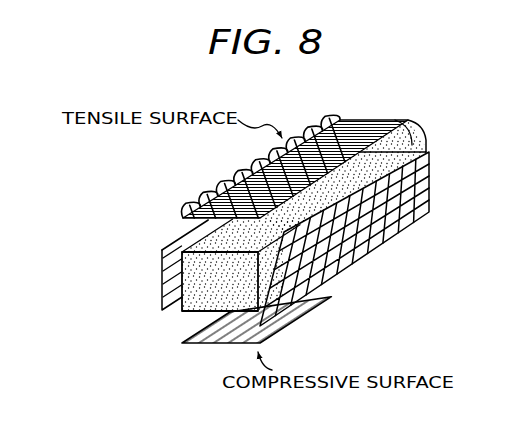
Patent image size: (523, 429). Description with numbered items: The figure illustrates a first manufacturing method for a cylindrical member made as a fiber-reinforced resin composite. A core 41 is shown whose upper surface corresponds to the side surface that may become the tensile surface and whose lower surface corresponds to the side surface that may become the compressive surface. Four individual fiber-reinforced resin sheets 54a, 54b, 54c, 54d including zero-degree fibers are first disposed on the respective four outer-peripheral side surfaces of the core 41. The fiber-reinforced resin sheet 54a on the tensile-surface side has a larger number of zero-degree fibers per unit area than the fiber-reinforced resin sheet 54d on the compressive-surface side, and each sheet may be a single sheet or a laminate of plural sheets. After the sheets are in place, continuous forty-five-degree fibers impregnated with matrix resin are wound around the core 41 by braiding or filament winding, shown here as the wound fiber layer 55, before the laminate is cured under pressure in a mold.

The core 41 is at (196, 276).
The fiber-reinforced resin sheet 54a is at (185, 219).
The fiber-reinforced resin sheet 54b is at (308, 286).
The fiber-reinforced resin sheet 54c is at (172, 300).
The fiber-reinforced resin sheet 54d is at (200, 345).
The corrugated fiber layer 55 is at (222, 179).